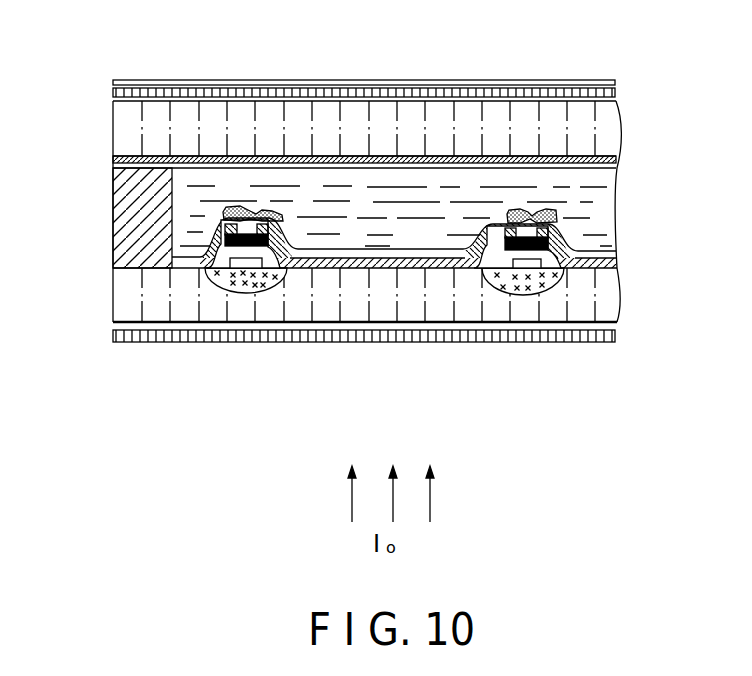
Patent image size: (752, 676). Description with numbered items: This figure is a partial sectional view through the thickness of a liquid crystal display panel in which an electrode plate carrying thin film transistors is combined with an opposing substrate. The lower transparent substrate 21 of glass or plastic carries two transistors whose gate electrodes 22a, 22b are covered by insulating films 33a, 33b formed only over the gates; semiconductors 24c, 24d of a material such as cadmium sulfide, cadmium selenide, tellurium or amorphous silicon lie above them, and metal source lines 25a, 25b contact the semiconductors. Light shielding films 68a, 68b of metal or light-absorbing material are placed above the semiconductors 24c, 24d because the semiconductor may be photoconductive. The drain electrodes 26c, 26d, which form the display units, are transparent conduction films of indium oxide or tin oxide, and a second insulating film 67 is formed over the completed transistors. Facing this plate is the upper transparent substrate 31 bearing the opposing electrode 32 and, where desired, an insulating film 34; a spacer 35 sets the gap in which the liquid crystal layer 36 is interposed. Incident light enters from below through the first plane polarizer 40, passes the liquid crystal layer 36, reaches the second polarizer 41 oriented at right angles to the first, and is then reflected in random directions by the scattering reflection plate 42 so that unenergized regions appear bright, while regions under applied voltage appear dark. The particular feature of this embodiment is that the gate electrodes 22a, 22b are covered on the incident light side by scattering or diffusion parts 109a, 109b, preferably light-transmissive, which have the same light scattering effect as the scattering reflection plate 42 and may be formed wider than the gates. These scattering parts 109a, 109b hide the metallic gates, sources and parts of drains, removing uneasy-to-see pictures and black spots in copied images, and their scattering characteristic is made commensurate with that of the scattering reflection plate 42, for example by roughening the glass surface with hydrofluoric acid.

The scattering reflection plate 42 is at (616, 87).
The second polarizer 41 is at (617, 98).
The transparent substrate 31 is at (608, 133).
The opposing electrode 32 is at (618, 163).
The insulating film 34 is at (618, 170).
The spacer 35 is at (120, 232).
The liquid crystal layer 36 is at (610, 215).
The second insulating film 67 is at (344, 249).
The drain electrode 26c is at (386, 262).
The drain electrode 26d is at (618, 258).
The source line 25a is at (232, 208).
The source line 25b is at (507, 213).
The light shielding film 68a is at (262, 222).
The light shielding film 68b is at (550, 213).
The semiconductor 24c is at (237, 266).
The semiconductor 24d is at (528, 237).
The gate electrode 22a is at (236, 275).
The gate electrode 22b is at (527, 262).
The insulating film 33a is at (260, 290).
The insulating film 33b is at (503, 270).
The scattering part 109a is at (217, 282).
The scattering part 109b is at (553, 282).
The transparent substrate 21 is at (608, 300).
The first plane polarizer 40 is at (616, 337).